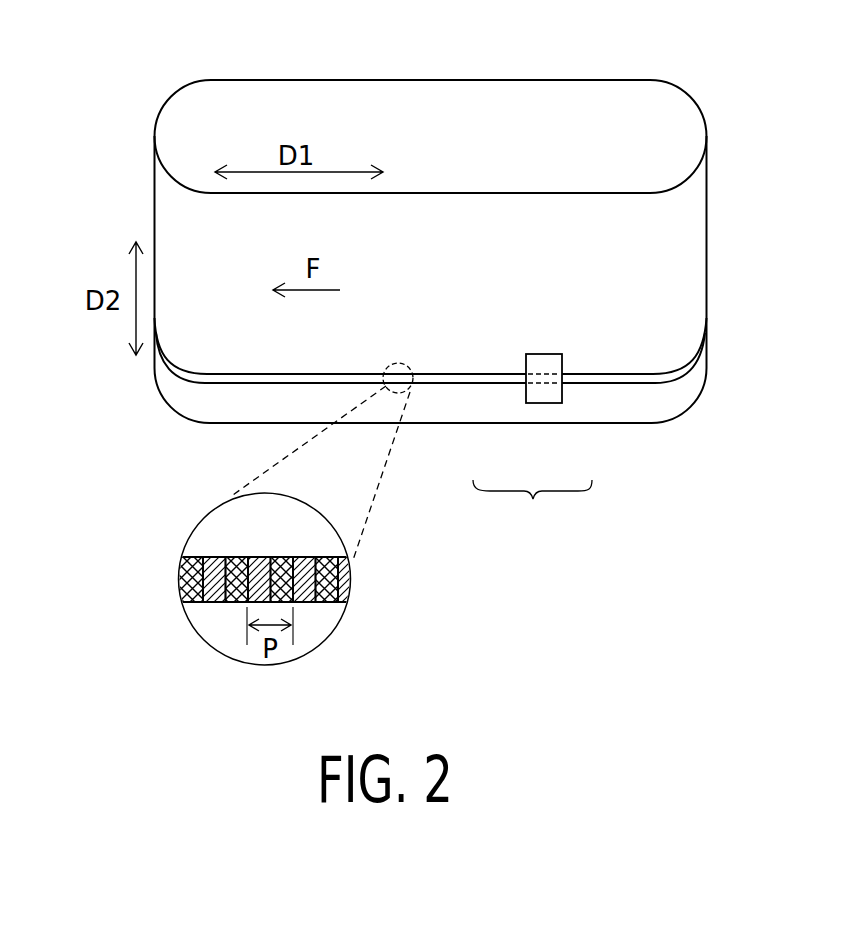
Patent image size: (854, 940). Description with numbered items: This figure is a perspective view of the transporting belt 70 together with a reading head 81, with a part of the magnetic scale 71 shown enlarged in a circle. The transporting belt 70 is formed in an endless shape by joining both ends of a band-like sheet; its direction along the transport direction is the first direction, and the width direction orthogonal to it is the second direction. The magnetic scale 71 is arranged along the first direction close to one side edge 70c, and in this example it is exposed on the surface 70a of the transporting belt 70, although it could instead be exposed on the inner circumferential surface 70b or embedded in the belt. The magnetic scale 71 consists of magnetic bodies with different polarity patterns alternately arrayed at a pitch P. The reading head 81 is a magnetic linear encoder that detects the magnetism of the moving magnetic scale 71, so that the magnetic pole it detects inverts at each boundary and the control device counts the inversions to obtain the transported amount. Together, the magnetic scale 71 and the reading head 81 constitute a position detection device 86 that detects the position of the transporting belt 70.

The transporting belt 70 is at (382, 264).
The surface of the transporting belt 70a is at (155, 222).
The inner circumferential surface of the transporting belt 70b is at (183, 101).
The side edge 70c is at (610, 424).
The magnetic scale 71 is at (497, 387).
The reading head 81 is at (545, 404).
The position detection device 86 is at (532, 506).